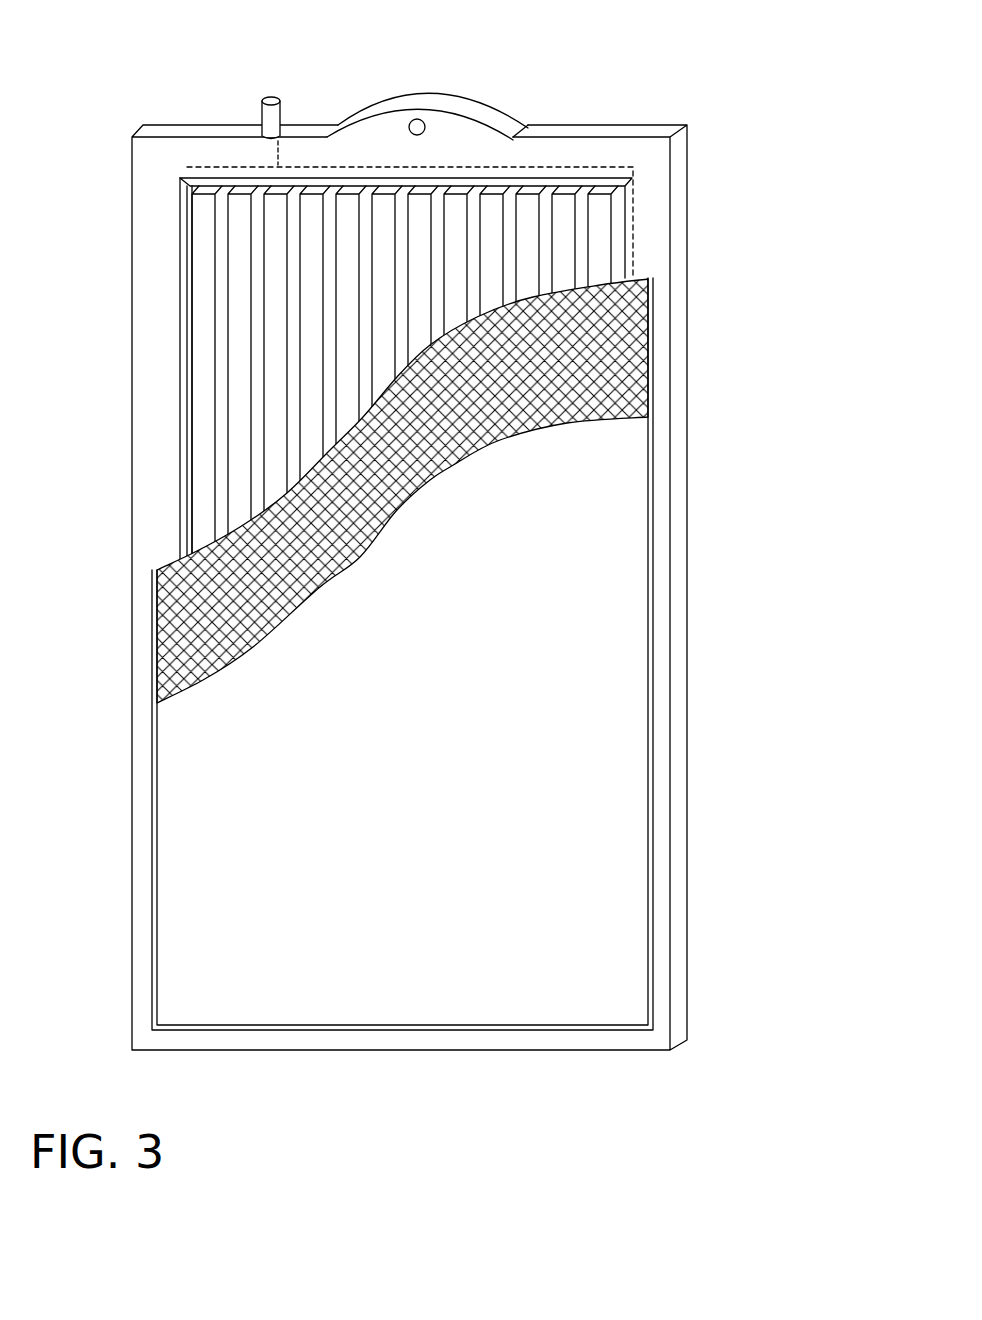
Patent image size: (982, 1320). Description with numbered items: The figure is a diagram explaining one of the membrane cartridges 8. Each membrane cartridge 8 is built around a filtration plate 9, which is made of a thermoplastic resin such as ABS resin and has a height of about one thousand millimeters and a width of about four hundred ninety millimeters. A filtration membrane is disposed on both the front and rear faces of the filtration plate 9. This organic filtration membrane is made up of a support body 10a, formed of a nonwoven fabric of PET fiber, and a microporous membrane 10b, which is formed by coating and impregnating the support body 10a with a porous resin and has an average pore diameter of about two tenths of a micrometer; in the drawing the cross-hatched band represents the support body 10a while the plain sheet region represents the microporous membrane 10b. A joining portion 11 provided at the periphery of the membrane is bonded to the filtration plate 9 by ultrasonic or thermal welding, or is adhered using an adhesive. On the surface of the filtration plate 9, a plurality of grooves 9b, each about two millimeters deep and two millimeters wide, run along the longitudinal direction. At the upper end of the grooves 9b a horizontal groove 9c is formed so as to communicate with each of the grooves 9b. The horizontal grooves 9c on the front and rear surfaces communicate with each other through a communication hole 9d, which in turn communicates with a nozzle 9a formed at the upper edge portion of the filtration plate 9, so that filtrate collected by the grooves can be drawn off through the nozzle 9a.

The membrane cartridge 8 is at (733, 580).
The filtration plate 9 is at (658, 257).
The nozzle 9a is at (283, 110).
The grooves 9b is at (217, 220).
The horizontal groove 9c is at (193, 183).
The communication hole 9d is at (263, 157).
The support body 10a is at (637, 385).
The microporous membrane 10b is at (633, 513).
The joining portion 11 is at (653, 750).